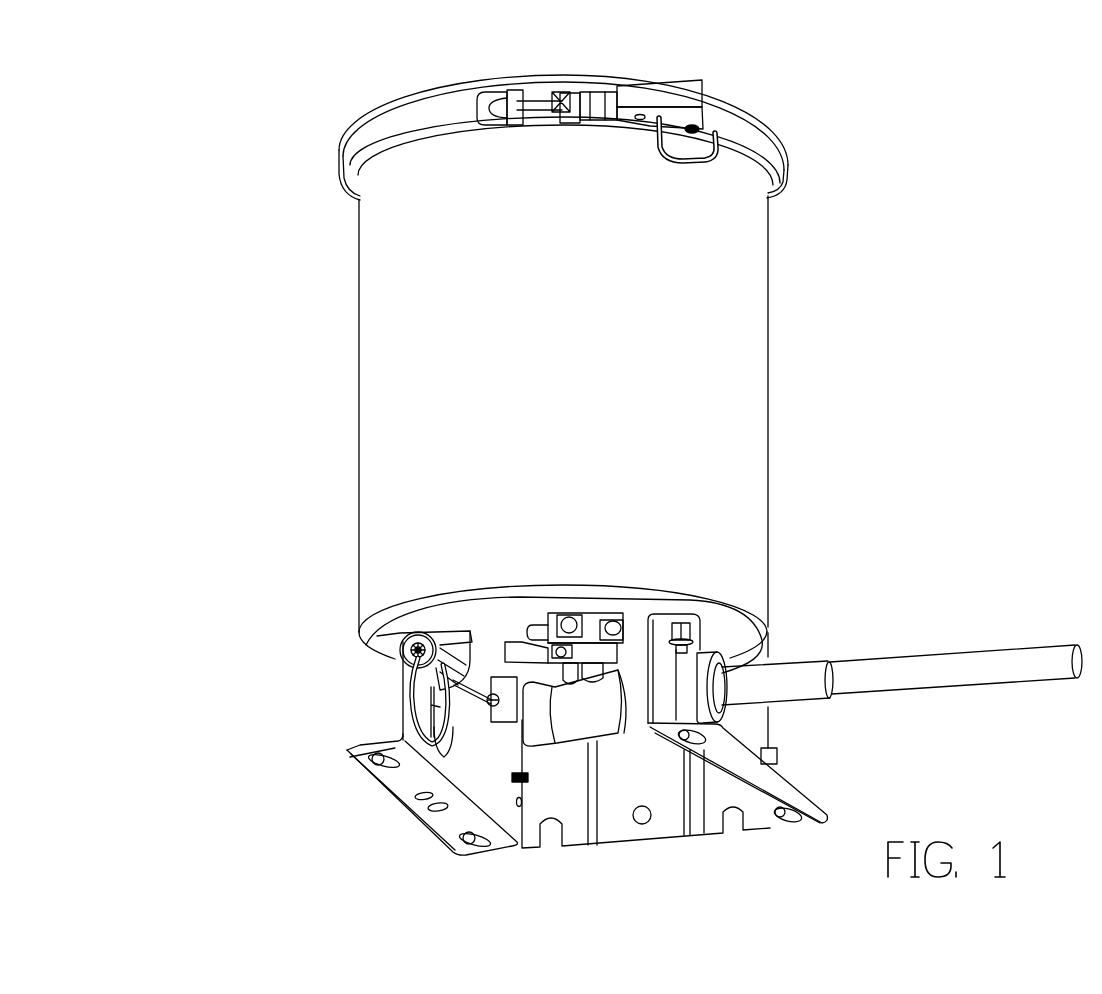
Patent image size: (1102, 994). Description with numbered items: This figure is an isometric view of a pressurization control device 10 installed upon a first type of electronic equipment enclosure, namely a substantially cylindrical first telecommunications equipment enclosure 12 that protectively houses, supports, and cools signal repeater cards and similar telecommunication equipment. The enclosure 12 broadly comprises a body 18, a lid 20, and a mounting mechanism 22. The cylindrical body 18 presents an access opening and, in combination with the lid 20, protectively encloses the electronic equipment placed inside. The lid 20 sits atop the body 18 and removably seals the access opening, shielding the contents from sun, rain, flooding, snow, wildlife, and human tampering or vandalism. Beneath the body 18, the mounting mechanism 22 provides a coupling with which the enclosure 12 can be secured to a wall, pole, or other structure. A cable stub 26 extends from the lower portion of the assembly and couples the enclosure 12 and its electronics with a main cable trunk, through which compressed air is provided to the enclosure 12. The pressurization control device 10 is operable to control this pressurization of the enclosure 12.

The pressurization control device 10 is at (538, 613).
The first telecommunications equipment enclosure 12 is at (963, 212).
The body 18 is at (405, 363).
The lid 20 is at (438, 90).
The mounting mechanism 22 is at (407, 787).
The cable stub 26 is at (930, 665).